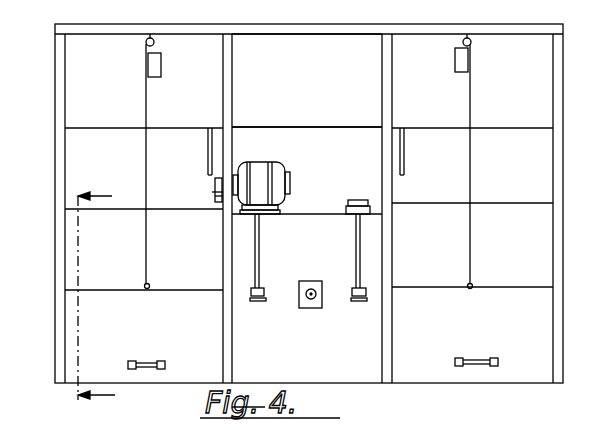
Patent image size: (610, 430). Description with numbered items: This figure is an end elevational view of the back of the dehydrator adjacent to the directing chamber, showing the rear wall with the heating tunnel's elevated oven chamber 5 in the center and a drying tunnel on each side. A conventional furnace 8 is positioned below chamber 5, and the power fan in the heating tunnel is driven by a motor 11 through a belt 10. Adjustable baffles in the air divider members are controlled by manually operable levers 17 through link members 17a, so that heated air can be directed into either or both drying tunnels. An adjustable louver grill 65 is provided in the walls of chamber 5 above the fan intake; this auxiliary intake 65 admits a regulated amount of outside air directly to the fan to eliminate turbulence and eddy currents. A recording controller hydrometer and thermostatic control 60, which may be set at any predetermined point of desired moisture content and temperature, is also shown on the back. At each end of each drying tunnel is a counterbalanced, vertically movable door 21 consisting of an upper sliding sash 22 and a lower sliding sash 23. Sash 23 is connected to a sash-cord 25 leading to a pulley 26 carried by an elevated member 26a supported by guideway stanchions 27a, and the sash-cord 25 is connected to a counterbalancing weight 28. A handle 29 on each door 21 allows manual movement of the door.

The counterbalanced, vertically movable door 21 is at (103, 311).
The upper sliding sash 22 is at (190, 271).
The lower sliding sash 23 is at (172, 326).
The sash-cord 25 is at (146, 99).
The pulley 26 is at (146, 42).
The elevated member 26a is at (322, 30).
The guideway stanchion 27a is at (65, 99).
The counterbalancing weight 28 is at (161, 61).
The handle 29 is at (152, 362).
The elevated oven chamber 5 is at (322, 130).
The furnace 8 is at (101, 297).
The belt 10 is at (214, 192).
The motor 11 is at (282, 170).
The manually operable lever 17 is at (260, 304).
The link member 17a is at (278, 204).
The recording controller hydrometer and thermostatic control 60 is at (310, 281).
The adjustable louver grill 65 is at (208, 155).